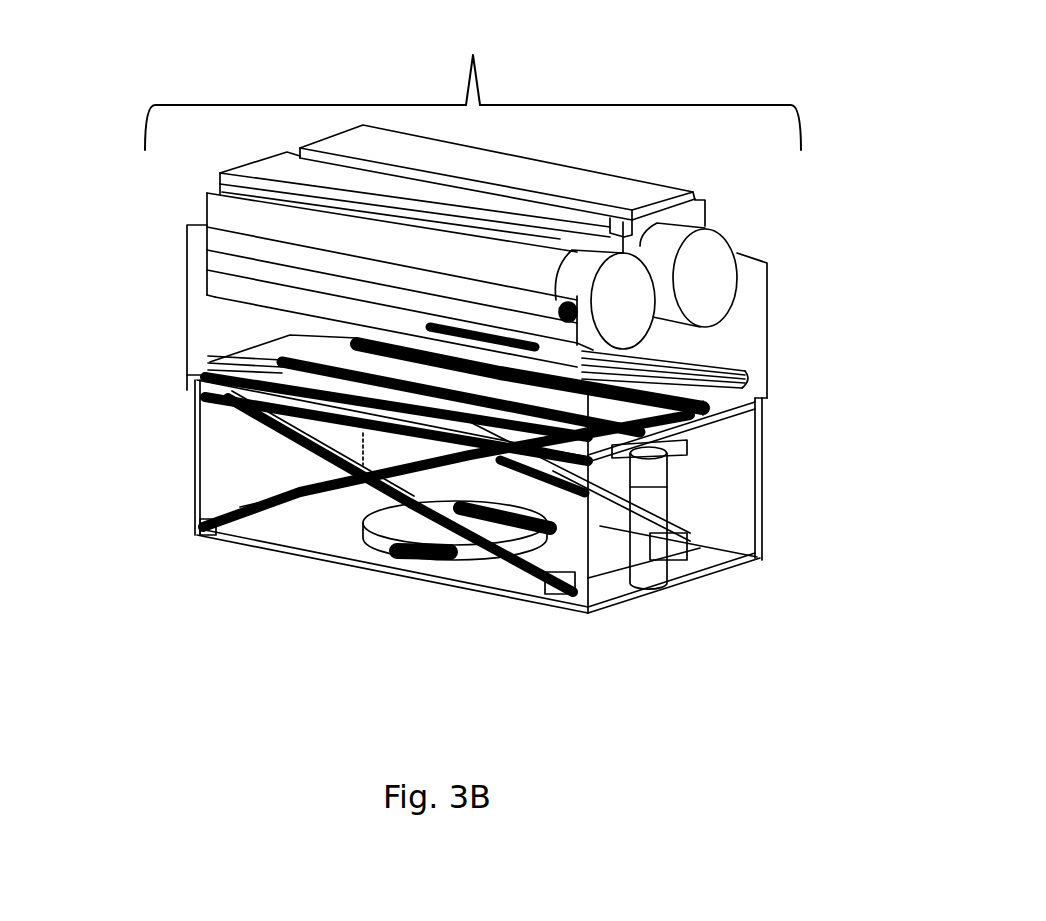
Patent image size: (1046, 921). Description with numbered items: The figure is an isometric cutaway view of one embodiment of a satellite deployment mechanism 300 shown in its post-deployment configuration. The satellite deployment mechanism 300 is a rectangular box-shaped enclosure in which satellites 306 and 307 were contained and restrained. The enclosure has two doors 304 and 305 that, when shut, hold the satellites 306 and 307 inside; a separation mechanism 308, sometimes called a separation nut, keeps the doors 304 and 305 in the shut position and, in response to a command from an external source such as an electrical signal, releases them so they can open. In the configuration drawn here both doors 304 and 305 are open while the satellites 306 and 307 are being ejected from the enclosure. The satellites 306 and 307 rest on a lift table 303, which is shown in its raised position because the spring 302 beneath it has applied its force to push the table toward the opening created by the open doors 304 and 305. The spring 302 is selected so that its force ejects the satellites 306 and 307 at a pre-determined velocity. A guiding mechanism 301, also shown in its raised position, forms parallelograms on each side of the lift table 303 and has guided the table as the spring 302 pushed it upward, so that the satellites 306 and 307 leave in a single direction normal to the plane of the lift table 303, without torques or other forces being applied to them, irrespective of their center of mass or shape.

The satellite deployment mechanism 300 is at (473, 82).
The guiding mechanism 301 is at (263, 523).
The spring 302 is at (380, 553).
The lift table 303 is at (417, 557).
The door 304 is at (770, 289).
The door 305 is at (190, 350).
The satellite 306 is at (426, 202).
The satellite 307 is at (502, 175).
The separation mechanism 308 is at (656, 452).